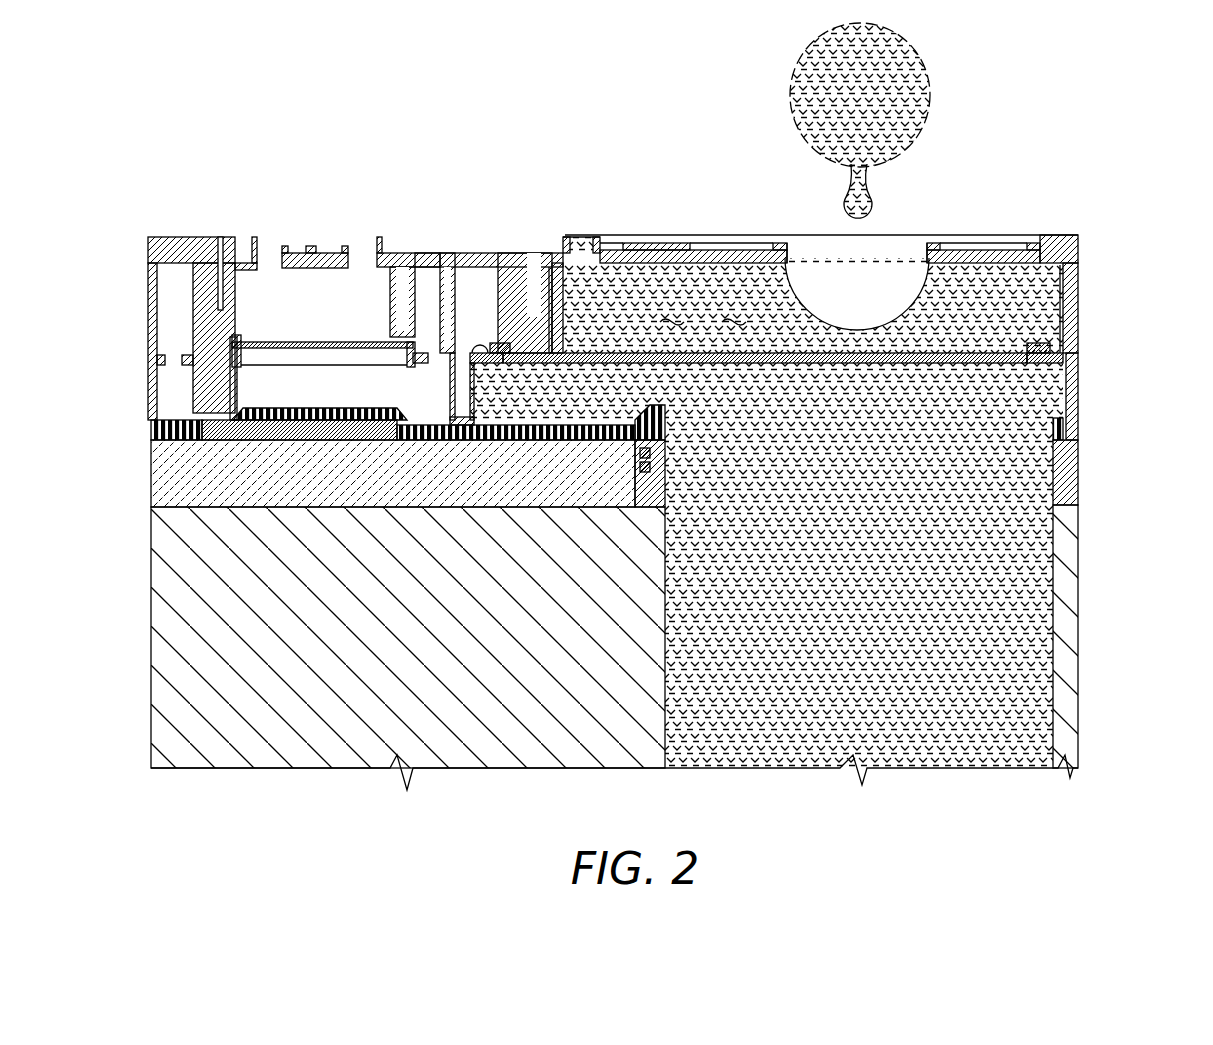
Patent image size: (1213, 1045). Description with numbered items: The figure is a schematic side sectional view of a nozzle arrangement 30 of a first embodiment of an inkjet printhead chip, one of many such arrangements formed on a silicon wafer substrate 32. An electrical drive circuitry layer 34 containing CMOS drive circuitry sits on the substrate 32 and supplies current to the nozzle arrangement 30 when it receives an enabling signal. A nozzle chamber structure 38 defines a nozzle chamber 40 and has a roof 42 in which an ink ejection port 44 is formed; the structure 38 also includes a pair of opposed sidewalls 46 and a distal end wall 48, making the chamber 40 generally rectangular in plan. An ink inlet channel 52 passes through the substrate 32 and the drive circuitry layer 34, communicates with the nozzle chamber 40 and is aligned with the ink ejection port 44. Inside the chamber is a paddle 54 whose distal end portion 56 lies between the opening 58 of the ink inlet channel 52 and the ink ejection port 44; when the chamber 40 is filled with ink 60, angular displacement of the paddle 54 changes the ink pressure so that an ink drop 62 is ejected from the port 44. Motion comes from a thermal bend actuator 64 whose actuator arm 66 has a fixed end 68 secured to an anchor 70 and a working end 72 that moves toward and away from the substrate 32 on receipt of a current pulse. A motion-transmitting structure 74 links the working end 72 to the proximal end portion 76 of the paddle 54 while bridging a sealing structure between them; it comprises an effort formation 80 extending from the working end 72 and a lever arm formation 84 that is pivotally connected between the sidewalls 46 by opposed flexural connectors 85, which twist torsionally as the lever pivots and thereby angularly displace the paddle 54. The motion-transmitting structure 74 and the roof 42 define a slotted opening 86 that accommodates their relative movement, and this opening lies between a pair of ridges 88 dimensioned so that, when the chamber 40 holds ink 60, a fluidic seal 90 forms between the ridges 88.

The nozzle arrangement 30 is at (1145, 188).
The silicon wafer substrate 32 is at (1066, 645).
The electrical drive circuitry layer 34 is at (1082, 470).
The nozzle chamber structure 38 is at (982, 240).
The nozzle chamber 40 is at (1040, 283).
The roof 42 is at (655, 243).
The ink ejection port 44 is at (897, 245).
The sidewalls 46 is at (703, 320).
The distal end wall 48 is at (1077, 320).
The ink inlet channel 52 is at (805, 748).
The paddle 54 is at (935, 357).
The distal end portion 56 is at (1031, 294).
The opening 58 is at (940, 432).
The ink 60 is at (706, 275).
The ink drop 62 is at (943, 78).
The thermal bend actuator 64 is at (305, 346).
The actuator arm 66 is at (320, 362).
The fixed end 68 is at (246, 345).
The anchor 70 is at (172, 237).
The working end 72 is at (412, 262).
The motion-transmitting structure 74 is at (462, 262).
The proximal end portion 76 is at (558, 352).
The effort formation 80 is at (373, 340).
The lever arm formation 84 is at (498, 258).
The flexural connectors 85 is at (428, 258).
The slotted opening 86 is at (578, 240).
The ridges 88 is at (571, 237).
The fluidic seal 90 is at (592, 242).